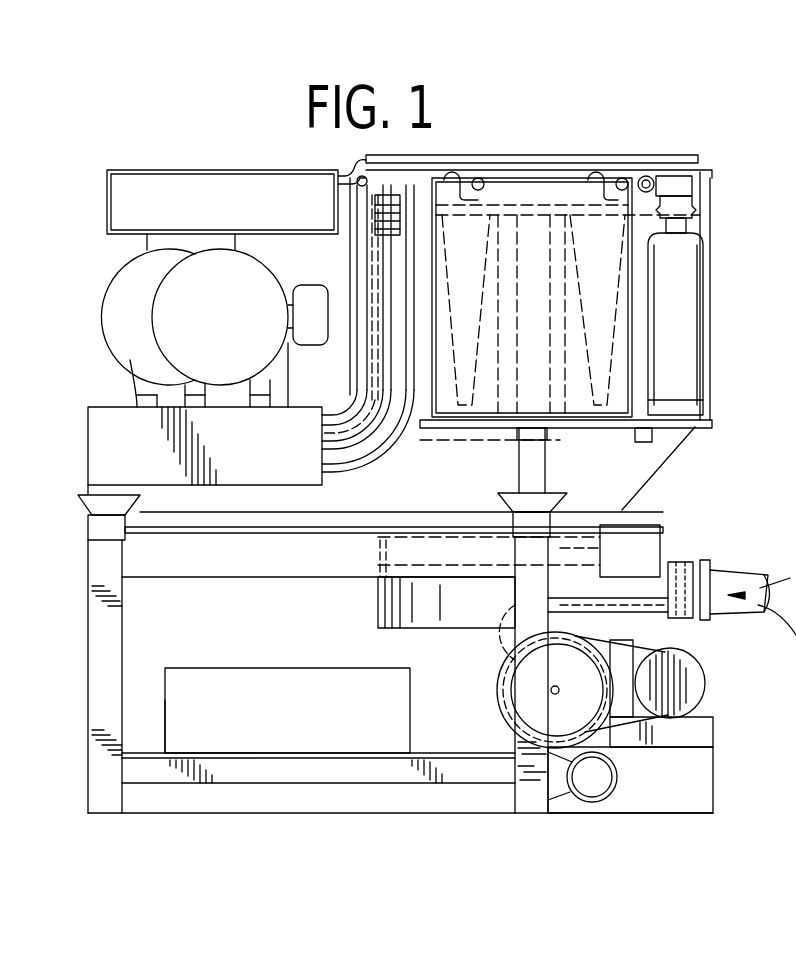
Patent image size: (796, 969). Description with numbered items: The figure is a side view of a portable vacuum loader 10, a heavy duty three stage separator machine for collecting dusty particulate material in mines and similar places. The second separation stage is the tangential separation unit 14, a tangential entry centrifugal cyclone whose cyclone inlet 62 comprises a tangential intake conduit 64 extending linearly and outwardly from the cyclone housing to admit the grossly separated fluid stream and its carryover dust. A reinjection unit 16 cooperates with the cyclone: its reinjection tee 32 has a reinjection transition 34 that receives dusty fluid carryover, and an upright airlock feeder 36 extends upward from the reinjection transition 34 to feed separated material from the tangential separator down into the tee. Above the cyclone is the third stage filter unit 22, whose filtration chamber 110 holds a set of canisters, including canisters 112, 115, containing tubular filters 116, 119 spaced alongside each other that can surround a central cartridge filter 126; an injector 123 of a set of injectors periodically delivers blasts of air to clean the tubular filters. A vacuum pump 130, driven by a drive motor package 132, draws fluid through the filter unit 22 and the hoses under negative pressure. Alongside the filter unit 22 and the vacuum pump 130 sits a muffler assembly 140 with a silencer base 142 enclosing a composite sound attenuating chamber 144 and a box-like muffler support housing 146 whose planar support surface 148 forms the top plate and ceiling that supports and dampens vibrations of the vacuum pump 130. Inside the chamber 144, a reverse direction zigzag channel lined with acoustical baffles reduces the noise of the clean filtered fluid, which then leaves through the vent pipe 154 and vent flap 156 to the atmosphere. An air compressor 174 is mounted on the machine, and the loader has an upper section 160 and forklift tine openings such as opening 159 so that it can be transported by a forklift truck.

The portable vacuum loader 10 is at (670, 480).
The tangential separation unit 14 is at (395, 612).
The reinjection unit 16 is at (500, 690).
The filter unit 22 is at (690, 262).
The reinjection tee 32 is at (607, 795).
The reinjection transition 34 is at (565, 775).
The airlock feeder 36 is at (505, 640).
The cyclone inlet 62 is at (705, 565).
The tangential intake conduit 64 is at (650, 622).
The filtration chamber 110 is at (585, 200).
The canister 112 is at (525, 245).
The canister 115 is at (560, 400).
The tubular filter 116 is at (500, 215).
The tubular filter 119 is at (630, 380).
The injector 123 is at (705, 304).
The central cartridge filter 126 is at (585, 335).
The vacuum pump 130 is at (150, 312).
The drive motor package 132 is at (130, 265).
The muffler assembly 140 is at (90, 400).
The silencer base 142 is at (118, 462).
The composite sound attenuating chamber 144 is at (328, 455).
The muffler support housing 146 is at (300, 490).
The planar support surface 148 is at (322, 404).
The vent pipe 154 is at (350, 246).
The vent flap 156 is at (365, 160).
The forklift tine opening 159 is at (345, 790).
The upper section 160 is at (648, 160).
The air compressor 174 is at (165, 708).